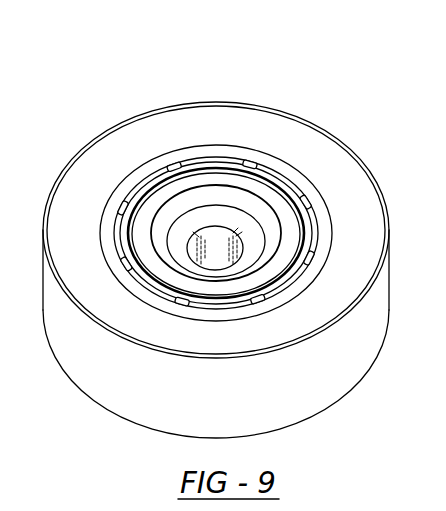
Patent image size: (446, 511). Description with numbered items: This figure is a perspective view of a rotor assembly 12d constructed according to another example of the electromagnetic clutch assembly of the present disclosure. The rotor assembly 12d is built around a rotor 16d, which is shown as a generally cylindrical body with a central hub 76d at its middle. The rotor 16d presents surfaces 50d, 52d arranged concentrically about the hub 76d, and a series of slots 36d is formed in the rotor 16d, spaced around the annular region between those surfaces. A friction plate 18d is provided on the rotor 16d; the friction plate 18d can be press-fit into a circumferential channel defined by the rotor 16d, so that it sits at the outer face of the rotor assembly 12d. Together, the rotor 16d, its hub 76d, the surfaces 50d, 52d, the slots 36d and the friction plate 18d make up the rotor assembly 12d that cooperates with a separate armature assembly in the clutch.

The rotor assembly 12d is at (112, 98).
The rotor 16d is at (82, 342).
The friction plate 18d is at (333, 176).
The slots 36d is at (171, 167).
The surface 50d is at (215, 186).
The surface 52d is at (117, 203).
The hub 76d is at (248, 259).